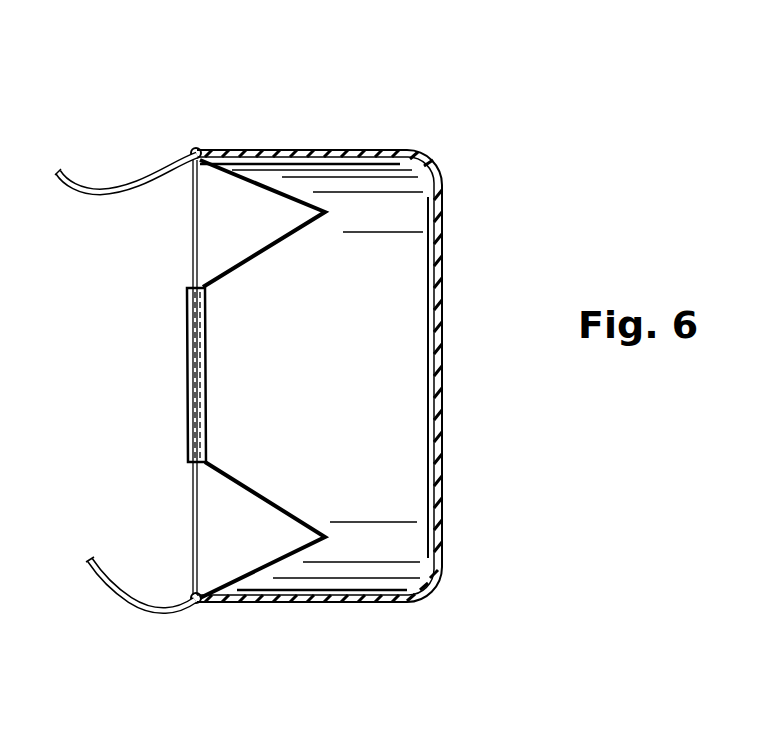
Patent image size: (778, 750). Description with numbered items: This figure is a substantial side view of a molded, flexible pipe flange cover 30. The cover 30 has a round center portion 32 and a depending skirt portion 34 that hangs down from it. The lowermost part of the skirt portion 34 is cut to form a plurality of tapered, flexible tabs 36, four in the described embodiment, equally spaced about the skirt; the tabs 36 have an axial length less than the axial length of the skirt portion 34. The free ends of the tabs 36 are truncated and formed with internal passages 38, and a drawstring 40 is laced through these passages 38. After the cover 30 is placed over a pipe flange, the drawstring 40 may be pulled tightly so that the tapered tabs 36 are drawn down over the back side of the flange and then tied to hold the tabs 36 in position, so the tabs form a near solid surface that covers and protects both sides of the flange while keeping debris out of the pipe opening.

The pipe flange cover 30 is at (460, 129).
The round center portion 32 is at (437, 307).
The depending skirt portion 34 is at (355, 149).
The tapered flexible tabs 36 is at (263, 177).
The internal passages 38 is at (200, 152).
The drawstring 40 is at (100, 578).